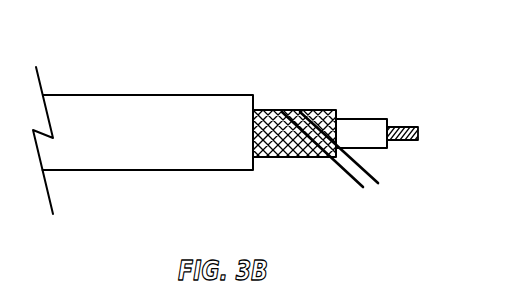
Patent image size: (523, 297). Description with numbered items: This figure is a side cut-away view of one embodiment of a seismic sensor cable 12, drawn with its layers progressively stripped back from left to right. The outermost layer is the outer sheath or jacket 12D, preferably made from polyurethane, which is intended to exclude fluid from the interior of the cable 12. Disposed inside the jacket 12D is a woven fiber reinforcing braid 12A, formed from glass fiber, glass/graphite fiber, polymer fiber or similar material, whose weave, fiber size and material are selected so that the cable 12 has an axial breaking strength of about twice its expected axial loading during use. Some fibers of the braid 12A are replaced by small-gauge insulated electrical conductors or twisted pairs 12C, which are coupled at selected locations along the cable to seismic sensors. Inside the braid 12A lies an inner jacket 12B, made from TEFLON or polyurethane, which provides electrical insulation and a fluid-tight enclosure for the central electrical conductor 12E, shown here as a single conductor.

The seismic sensor cable 12 is at (263, 59).
The woven fiber reinforcing braid 12A is at (267, 110).
The inner jacket 12B is at (345, 119).
The insulated electrical conductor pairs 12C is at (347, 175).
The outer jacket 12D is at (79, 95).
The central electrical conductor 12E is at (418, 133).